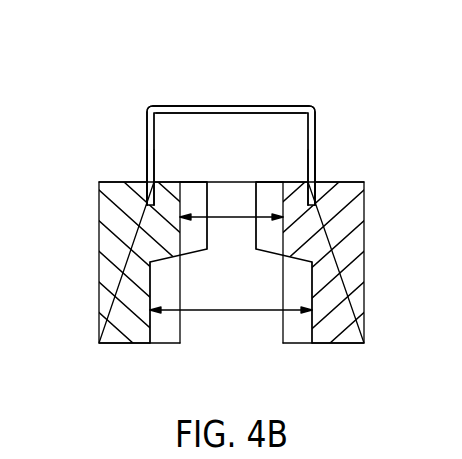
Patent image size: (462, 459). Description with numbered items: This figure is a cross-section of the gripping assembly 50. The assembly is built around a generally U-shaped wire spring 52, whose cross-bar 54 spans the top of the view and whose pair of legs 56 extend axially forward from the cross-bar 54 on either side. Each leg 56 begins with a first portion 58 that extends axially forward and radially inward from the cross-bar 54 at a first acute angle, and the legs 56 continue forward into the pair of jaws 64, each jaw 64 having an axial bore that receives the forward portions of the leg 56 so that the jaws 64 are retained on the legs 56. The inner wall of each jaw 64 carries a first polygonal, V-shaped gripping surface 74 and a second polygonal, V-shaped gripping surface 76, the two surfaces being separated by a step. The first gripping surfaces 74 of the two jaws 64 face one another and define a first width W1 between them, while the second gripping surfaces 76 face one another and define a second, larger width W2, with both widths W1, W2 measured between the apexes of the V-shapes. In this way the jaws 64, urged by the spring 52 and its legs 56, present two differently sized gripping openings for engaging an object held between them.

The gripping assembly 50 is at (366, 112).
The wire spring 52 is at (245, 106).
The cross-bar 54 is at (206, 106).
The legs 56 is at (147, 133).
The first portion 58 is at (147, 163).
The jaws 64 is at (99, 254).
The first gripping surface 74 is at (195, 190).
The second gripping surface 76 is at (152, 328).
The first width W1 is at (230, 216).
The second width W2 is at (228, 309).